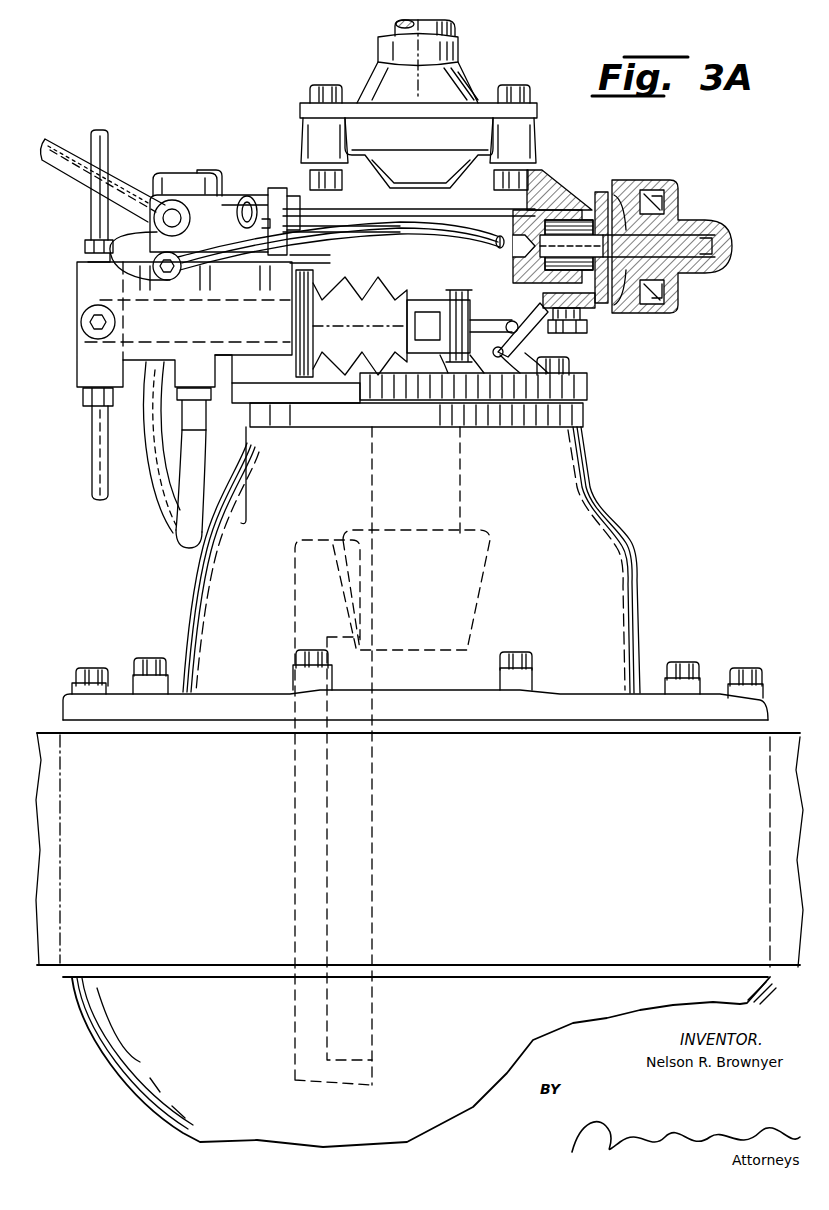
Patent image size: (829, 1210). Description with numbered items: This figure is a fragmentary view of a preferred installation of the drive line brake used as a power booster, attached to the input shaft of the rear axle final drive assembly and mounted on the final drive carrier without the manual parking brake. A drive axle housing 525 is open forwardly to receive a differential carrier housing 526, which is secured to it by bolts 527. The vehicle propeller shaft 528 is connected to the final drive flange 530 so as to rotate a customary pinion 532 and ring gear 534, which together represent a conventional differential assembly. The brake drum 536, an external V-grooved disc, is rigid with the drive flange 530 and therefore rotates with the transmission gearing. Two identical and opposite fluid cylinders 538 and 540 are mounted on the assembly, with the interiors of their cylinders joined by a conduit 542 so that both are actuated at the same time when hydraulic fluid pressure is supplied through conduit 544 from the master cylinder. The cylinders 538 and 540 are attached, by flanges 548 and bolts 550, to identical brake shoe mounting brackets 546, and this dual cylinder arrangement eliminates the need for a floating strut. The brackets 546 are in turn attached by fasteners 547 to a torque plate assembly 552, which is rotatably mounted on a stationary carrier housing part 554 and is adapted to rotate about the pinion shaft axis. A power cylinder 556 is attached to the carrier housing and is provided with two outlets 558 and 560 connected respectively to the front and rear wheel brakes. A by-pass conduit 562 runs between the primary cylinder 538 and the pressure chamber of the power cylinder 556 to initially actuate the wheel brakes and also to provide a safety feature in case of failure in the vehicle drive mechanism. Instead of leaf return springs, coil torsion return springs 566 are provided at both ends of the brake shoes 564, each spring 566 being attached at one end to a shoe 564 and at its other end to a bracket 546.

The drive axle housing 525 is at (147, 945).
The differential carrier housing 526 is at (630, 654).
The bolts 527 is at (515, 670).
The vehicle propeller shaft 528 is at (376, 75).
The final drive flange 530 is at (533, 143).
The pinion 532 is at (484, 544).
The ring gear 534 is at (305, 593).
The brake drum 536 is at (536, 214).
The fluid cylinder 538 is at (211, 208).
The fluid cylinder 540 is at (692, 203).
The conduit 542 is at (388, 238).
The conduit 544 is at (117, 173).
The brake shoe mounting bracket 546 is at (290, 182).
The fasteners 547 is at (580, 333).
The flange 548 is at (192, 196).
The bolts 550 is at (240, 200).
The torque plate assembly 552 is at (510, 338).
The stationary carrier housing part 554 is at (577, 392).
The power cylinder 556 is at (90, 347).
The outlet 558 is at (95, 205).
The outlet 560 is at (97, 450).
The by-pass conduit 562 is at (160, 478).
The brake shoe 564 is at (540, 212).
The coil torsion return spring 566 is at (312, 222).